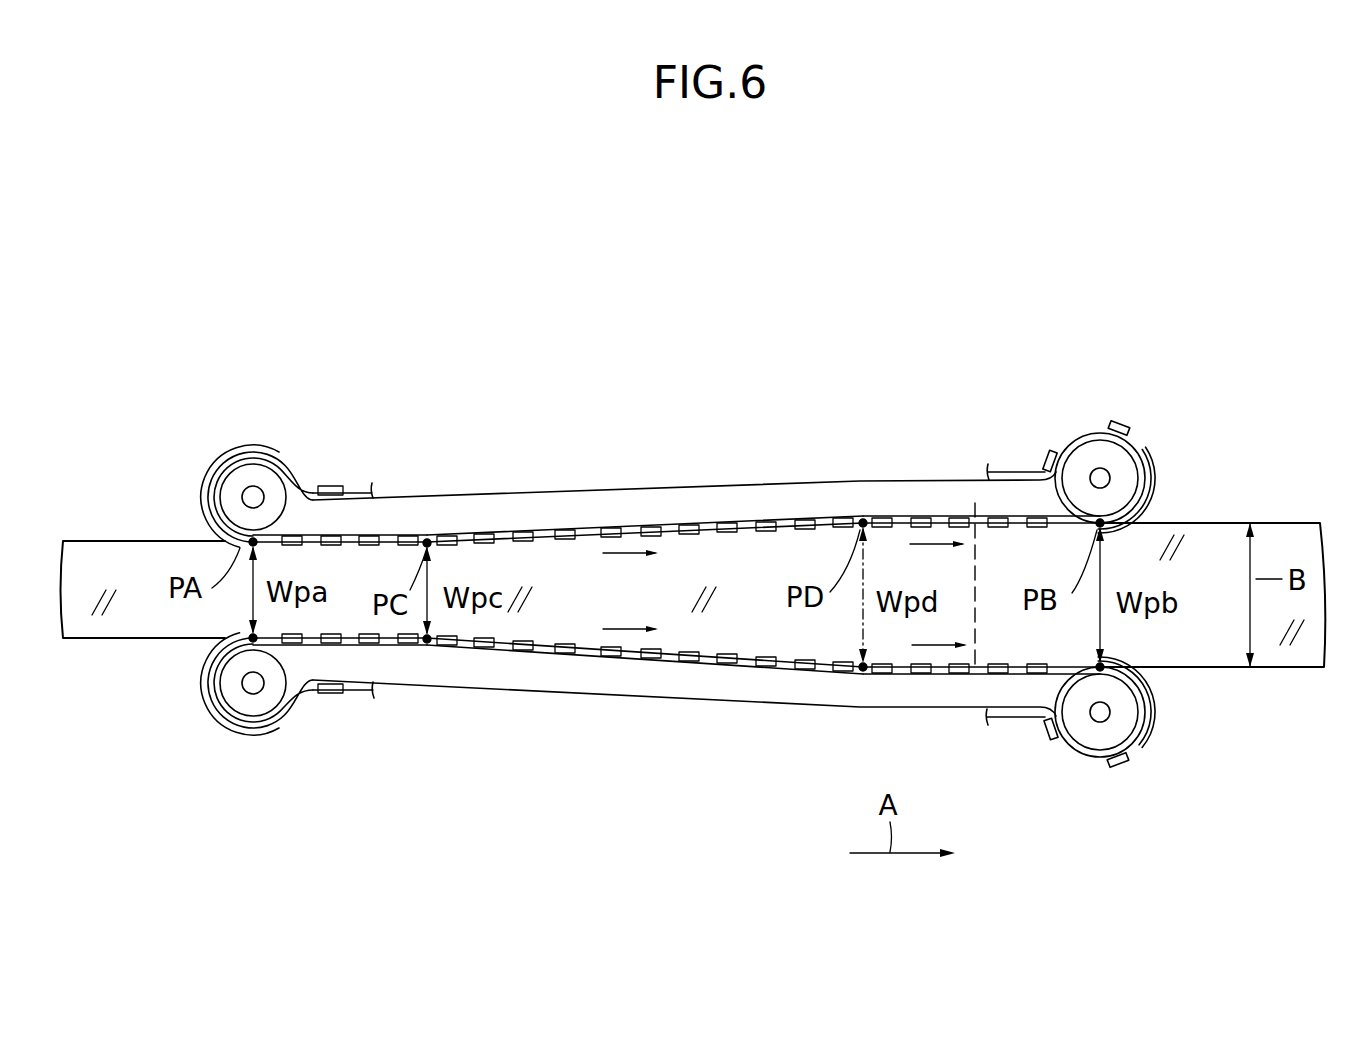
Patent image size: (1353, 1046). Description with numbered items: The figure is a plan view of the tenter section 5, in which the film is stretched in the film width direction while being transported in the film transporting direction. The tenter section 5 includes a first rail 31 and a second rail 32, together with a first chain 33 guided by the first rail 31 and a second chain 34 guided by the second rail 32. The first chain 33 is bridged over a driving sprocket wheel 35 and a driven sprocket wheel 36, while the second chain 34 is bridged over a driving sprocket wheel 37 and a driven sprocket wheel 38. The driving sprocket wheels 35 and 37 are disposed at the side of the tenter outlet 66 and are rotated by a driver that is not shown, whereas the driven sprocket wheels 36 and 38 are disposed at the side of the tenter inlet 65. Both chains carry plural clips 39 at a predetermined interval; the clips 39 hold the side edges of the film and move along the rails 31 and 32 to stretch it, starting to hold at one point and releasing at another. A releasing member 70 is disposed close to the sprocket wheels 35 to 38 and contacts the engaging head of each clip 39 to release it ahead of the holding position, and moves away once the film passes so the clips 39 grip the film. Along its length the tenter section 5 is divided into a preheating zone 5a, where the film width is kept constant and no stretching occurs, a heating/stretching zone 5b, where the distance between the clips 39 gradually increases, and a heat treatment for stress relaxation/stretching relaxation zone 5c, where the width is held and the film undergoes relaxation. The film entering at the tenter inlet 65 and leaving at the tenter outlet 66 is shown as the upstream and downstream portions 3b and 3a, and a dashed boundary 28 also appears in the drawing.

The tenter section 5 is at (713, 258).
The preheating zone 5a is at (253, 352).
The heating/stretching zone 5b is at (858, 352).
The heat treatment for stress relaxation/stretching relaxation zone 5c is at (868, 352).
The sensor 28 is at (975, 503).
The first rail 31 is at (748, 500).
The second rail 32 is at (752, 700).
The first chain 33 is at (362, 490).
The second chain 34 is at (360, 690).
The driving sprocket wheel 35 is at (1122, 459).
The driven sprocket wheel 36 is at (256, 478).
The driving sprocket wheel 37 is at (1120, 729).
The driven sprocket wheel 38 is at (254, 700).
The clips 39 is at (652, 526).
The tenter inlet 65 is at (200, 645).
The tenter outlet 66 is at (1155, 675).
The releasing member 70 is at (237, 458).
The downstream sheet 3a is at (1227, 538).
The upstream sheet 3b is at (112, 558).